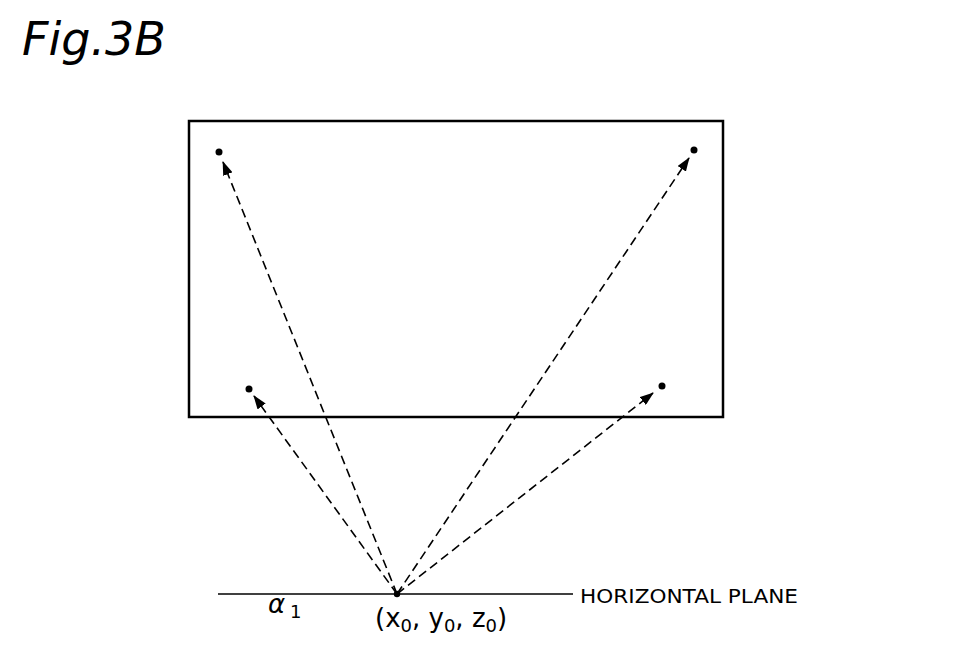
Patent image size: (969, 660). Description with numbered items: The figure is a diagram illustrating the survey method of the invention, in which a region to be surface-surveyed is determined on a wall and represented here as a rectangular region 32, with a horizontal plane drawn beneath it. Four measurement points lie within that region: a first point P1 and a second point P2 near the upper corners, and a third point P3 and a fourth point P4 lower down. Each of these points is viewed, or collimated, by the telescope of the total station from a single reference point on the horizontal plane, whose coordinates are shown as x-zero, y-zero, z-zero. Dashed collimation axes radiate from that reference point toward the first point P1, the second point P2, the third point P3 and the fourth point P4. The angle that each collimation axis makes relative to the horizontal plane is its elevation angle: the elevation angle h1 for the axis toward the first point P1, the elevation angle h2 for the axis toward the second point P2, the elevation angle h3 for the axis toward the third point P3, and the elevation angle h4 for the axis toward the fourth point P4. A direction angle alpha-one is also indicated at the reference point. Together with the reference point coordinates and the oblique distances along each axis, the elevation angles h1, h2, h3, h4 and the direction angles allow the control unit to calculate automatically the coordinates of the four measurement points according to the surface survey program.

The display plane / screen 32 is at (456, 128).
The first point P1 is at (219, 152).
The second point P2 is at (694, 150).
The third point P3 is at (662, 386).
The fourth point P4 is at (249, 389).
The elevation angle h1 is at (336, 469).
The elevation angle h2 is at (482, 480).
The elevation angle h3 is at (484, 531).
The elevation angle h4 is at (335, 516).